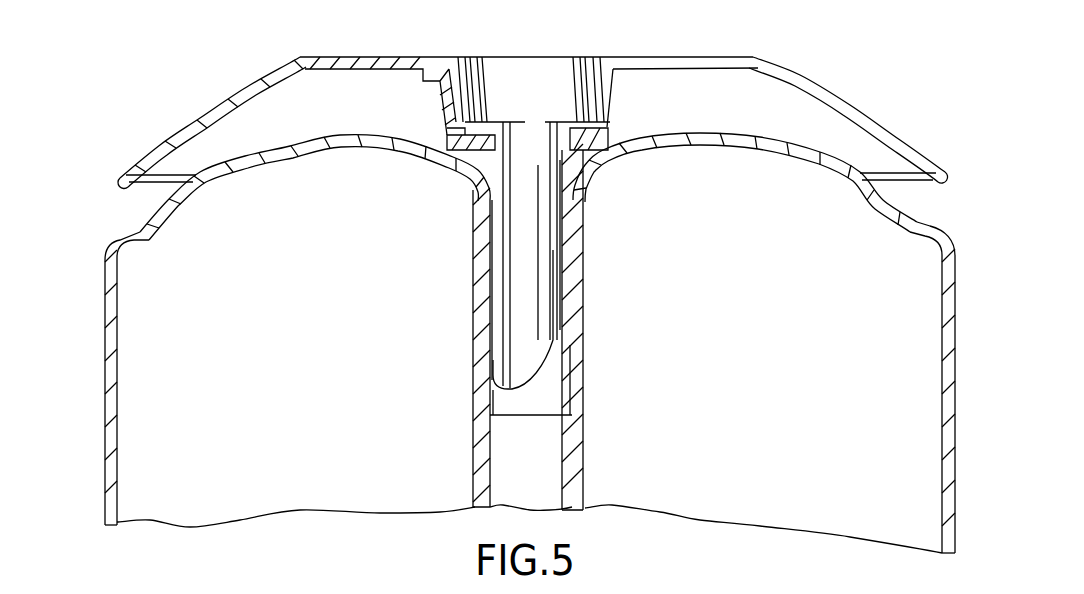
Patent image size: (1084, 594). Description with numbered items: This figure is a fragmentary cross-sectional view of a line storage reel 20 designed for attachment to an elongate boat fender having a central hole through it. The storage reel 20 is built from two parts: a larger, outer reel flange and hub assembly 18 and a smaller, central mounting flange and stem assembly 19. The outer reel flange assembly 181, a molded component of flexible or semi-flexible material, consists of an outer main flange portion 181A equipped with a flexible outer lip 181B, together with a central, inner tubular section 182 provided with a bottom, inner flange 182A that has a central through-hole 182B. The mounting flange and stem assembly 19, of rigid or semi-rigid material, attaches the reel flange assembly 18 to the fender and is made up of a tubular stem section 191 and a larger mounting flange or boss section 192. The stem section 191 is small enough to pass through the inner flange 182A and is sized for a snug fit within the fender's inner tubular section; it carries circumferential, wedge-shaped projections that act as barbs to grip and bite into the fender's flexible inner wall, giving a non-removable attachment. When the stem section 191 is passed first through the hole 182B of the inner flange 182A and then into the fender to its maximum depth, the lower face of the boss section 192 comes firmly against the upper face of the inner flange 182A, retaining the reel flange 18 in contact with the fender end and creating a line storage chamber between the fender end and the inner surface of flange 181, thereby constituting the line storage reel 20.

The outer reel flange and hub assembly 18 is at (612, 106).
The outer reel flange assembly 181 is at (205, 101).
The outer main flange portion 181A is at (399, 57).
The flexible outer lip 181B is at (123, 180).
The central inner tubular section 182 is at (450, 102).
The bottom inner flange 182A is at (487, 123).
The central through-hole 182B is at (462, 128).
The central mounting flange and stem assembly 19 is at (586, 250).
The tubular stem section 191 is at (578, 320).
The mounting flange or boss section 192 is at (462, 136).
The line storage reel 20 is at (820, 77).